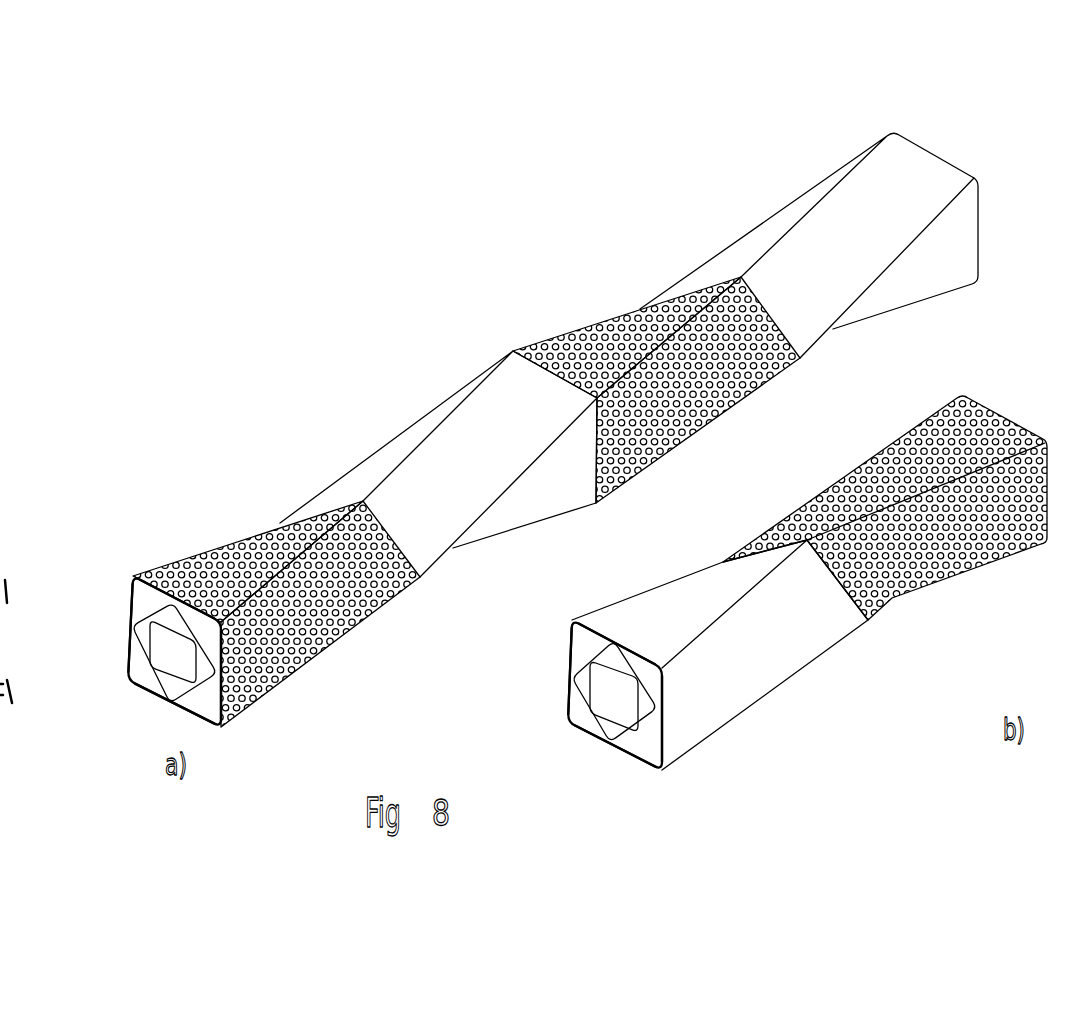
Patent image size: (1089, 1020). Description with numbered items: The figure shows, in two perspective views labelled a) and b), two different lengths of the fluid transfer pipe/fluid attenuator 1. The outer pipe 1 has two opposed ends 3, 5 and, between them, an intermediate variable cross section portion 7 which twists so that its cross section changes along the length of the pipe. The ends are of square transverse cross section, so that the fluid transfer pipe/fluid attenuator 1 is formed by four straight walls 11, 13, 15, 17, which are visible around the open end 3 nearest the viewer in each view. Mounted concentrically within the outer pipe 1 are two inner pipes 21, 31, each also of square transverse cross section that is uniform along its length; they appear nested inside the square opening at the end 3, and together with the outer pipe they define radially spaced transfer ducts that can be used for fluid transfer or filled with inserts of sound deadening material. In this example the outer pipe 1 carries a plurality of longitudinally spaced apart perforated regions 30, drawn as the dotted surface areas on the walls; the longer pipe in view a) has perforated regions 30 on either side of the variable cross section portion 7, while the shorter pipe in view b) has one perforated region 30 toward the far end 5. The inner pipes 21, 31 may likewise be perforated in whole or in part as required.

The fluid transfer pipe/fluid attenuator 1 is at (456, 275).
The end 3 is at (140, 736).
The end 5 is at (955, 130).
The intermediate variable cross section portion 7 is at (497, 383).
The straight wall 11 is at (222, 686).
The straight wall 13 is at (148, 576).
The straight wall 15 is at (127, 617).
The straight wall 17 is at (143, 693).
The inner pipe 21 is at (208, 725).
The perforated region 30 is at (213, 548).
The inner pipe 31 is at (147, 652).